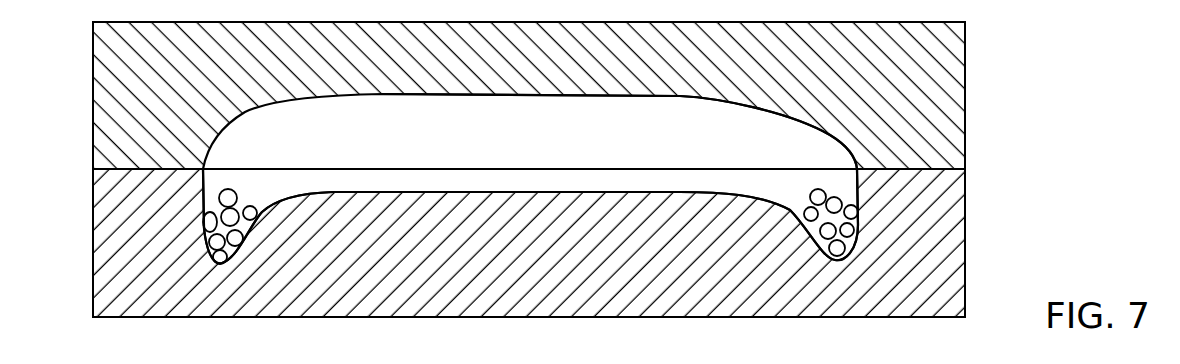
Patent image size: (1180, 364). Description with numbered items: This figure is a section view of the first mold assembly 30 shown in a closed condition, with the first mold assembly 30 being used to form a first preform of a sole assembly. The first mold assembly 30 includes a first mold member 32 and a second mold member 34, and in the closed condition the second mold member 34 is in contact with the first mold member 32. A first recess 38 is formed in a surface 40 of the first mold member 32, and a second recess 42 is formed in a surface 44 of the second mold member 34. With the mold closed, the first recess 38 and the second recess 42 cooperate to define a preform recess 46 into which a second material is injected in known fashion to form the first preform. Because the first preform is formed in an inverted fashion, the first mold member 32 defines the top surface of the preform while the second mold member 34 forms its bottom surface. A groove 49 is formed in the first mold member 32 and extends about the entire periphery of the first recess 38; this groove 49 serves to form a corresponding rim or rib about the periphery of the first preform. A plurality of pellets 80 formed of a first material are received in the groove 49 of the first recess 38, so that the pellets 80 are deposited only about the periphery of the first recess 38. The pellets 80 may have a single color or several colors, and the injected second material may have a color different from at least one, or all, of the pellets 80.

The first mold assembly 30 is at (1012, 175).
The first mold member 32 is at (953, 258).
The second mold member 34 is at (953, 70).
The first recess 38 is at (413, 192).
The surface 40 is at (737, 167).
The second recess 42 is at (610, 98).
The surface 44 is at (152, 172).
The preform recess 46 is at (540, 150).
The groove 49 is at (228, 248).
The pellets 80 is at (233, 195).